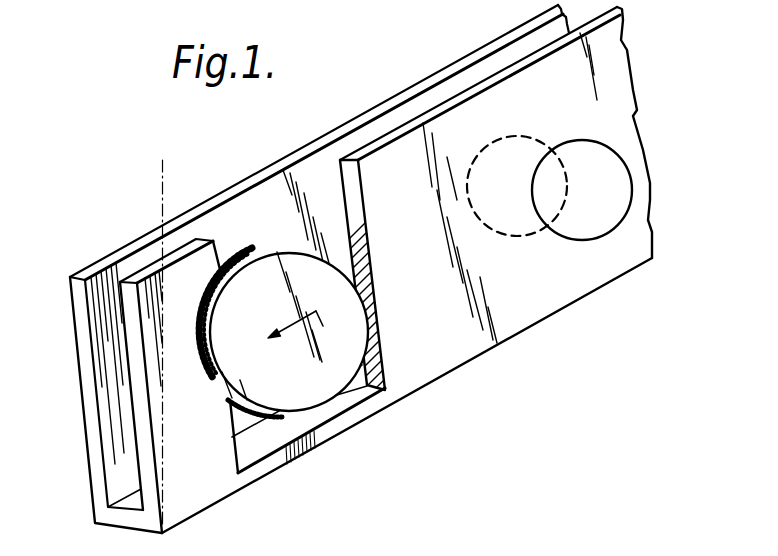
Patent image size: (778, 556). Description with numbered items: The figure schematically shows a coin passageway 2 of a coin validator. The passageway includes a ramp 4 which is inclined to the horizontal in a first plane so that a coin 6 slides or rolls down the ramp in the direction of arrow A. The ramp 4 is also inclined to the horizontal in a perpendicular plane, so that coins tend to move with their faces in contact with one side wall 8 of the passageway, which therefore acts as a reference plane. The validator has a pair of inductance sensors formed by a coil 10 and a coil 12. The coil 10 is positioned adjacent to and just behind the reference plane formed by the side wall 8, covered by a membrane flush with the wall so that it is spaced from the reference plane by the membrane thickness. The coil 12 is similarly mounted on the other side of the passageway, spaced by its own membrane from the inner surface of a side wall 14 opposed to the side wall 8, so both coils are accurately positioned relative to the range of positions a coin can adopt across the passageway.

The coin passageway 2 is at (348, 98).
The ramp 4 is at (258, 448).
The coin 6 is at (275, 252).
The side wall 8 is at (288, 193).
The coil 10 is at (485, 224).
The coil 12 is at (620, 222).
The side wall 14 is at (403, 124).
The arrow A is at (304, 327).